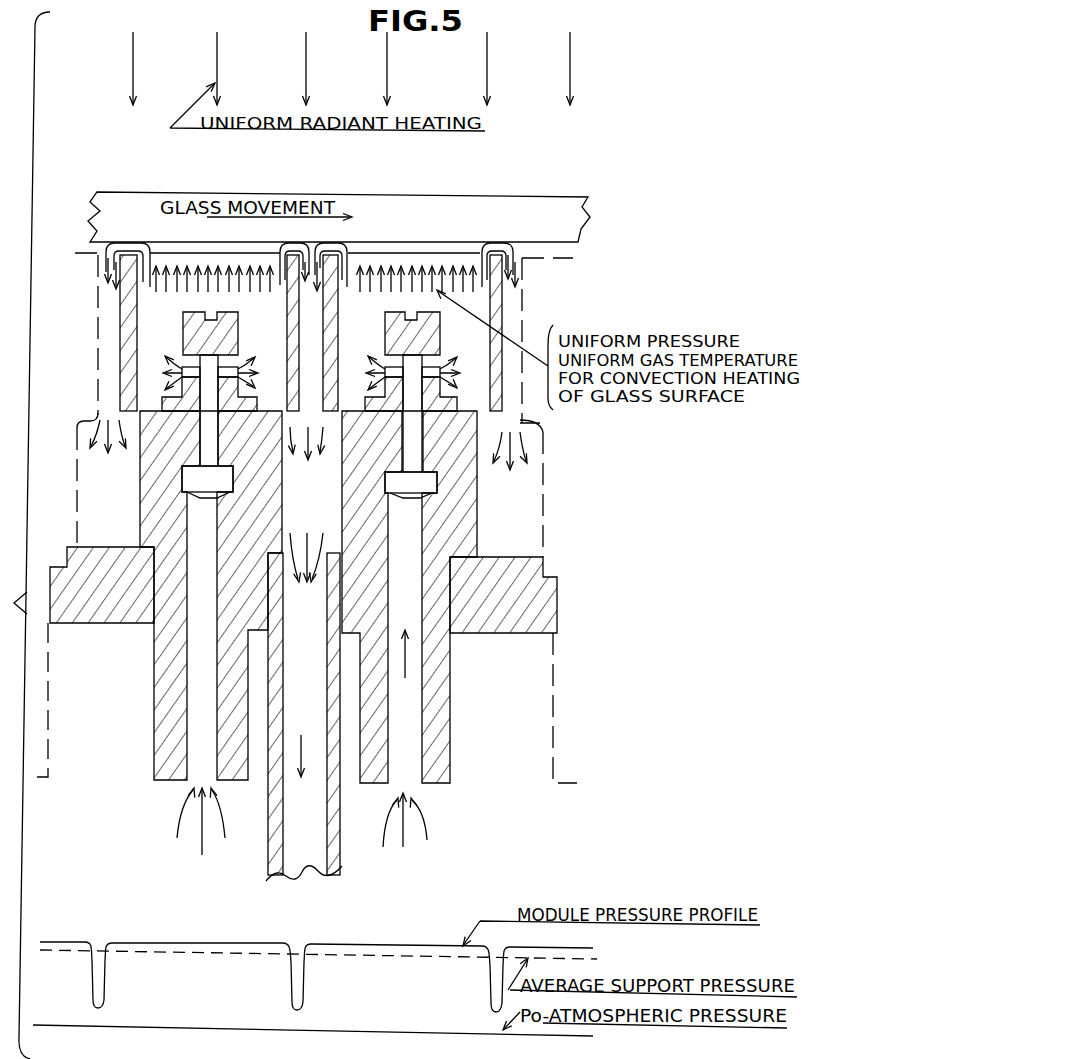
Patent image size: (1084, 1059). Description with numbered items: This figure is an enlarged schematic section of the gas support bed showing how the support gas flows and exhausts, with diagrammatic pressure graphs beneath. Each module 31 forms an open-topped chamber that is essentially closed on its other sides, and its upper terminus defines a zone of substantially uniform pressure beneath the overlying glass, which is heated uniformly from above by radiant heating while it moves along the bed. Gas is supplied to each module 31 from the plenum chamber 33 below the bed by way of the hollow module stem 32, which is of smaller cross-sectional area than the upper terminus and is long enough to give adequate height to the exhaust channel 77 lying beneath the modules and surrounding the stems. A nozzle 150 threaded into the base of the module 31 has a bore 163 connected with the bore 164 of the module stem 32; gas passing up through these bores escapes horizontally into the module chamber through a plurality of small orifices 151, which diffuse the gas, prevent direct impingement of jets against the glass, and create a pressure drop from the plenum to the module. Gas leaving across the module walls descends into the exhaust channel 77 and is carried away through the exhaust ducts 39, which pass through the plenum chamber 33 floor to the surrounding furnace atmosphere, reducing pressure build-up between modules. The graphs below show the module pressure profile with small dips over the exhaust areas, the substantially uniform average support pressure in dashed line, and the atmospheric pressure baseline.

The module 31 is at (120, 334).
The module stem 32 is at (140, 493).
The plenum chamber 33 is at (452, 638).
The exhaust duct 39 is at (268, 853).
The exhaust channel 77 is at (306, 505).
The nozzle 150 is at (240, 334).
The orifices 151 is at (187, 356).
The nozzle bore 163 is at (208, 400).
The stem bore 164 is at (193, 650).